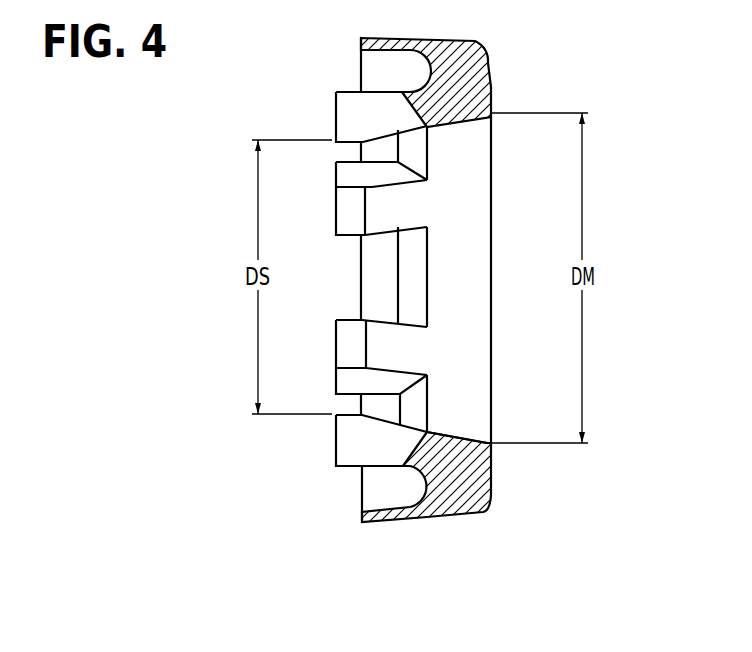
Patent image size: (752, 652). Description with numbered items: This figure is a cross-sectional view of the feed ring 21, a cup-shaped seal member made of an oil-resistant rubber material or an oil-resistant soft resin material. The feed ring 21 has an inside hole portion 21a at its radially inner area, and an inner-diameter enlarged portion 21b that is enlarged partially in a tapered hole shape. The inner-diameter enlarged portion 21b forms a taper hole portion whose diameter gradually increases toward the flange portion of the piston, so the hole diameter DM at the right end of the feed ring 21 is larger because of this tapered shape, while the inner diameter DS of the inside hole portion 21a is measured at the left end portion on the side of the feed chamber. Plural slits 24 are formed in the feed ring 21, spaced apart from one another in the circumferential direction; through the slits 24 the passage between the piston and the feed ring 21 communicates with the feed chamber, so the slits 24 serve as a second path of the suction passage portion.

The feed ring 21 is at (434, 307).
The inside hole portion 21a is at (350, 414).
The inner-diameter enlarged portion 21b is at (440, 431).
The slits 24 is at (401, 92).